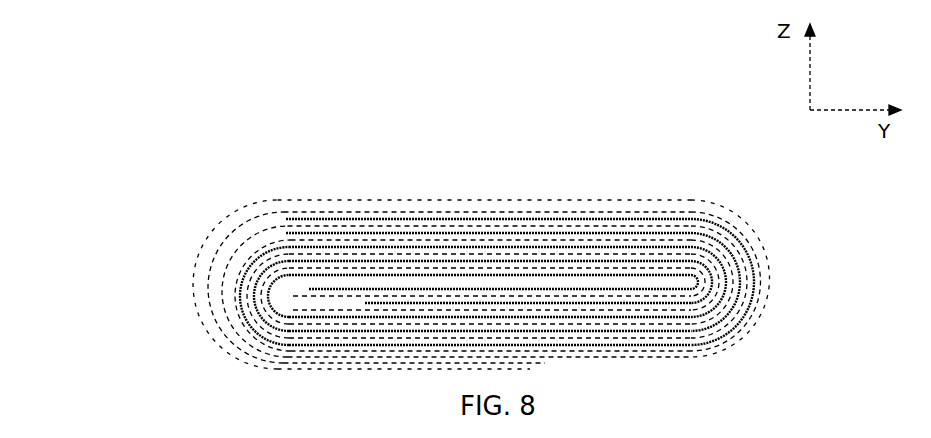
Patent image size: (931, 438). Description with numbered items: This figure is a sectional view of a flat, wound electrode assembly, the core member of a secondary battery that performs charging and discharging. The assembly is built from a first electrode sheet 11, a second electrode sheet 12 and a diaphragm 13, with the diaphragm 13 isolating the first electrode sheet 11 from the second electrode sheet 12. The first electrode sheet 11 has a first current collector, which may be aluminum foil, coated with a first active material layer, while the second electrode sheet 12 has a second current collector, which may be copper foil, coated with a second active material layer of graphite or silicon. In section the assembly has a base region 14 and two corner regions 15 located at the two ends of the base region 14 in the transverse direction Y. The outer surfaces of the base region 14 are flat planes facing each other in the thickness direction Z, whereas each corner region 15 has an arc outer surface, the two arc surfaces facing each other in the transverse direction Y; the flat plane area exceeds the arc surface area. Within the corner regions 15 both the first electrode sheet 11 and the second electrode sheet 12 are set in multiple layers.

The first electrode sheet 11 is at (486, 234).
The second electrode sheet 12 is at (415, 221).
The diaphragm 13 is at (548, 213).
The base region 14 is at (342, 165).
The corner regions 15 is at (160, 293).